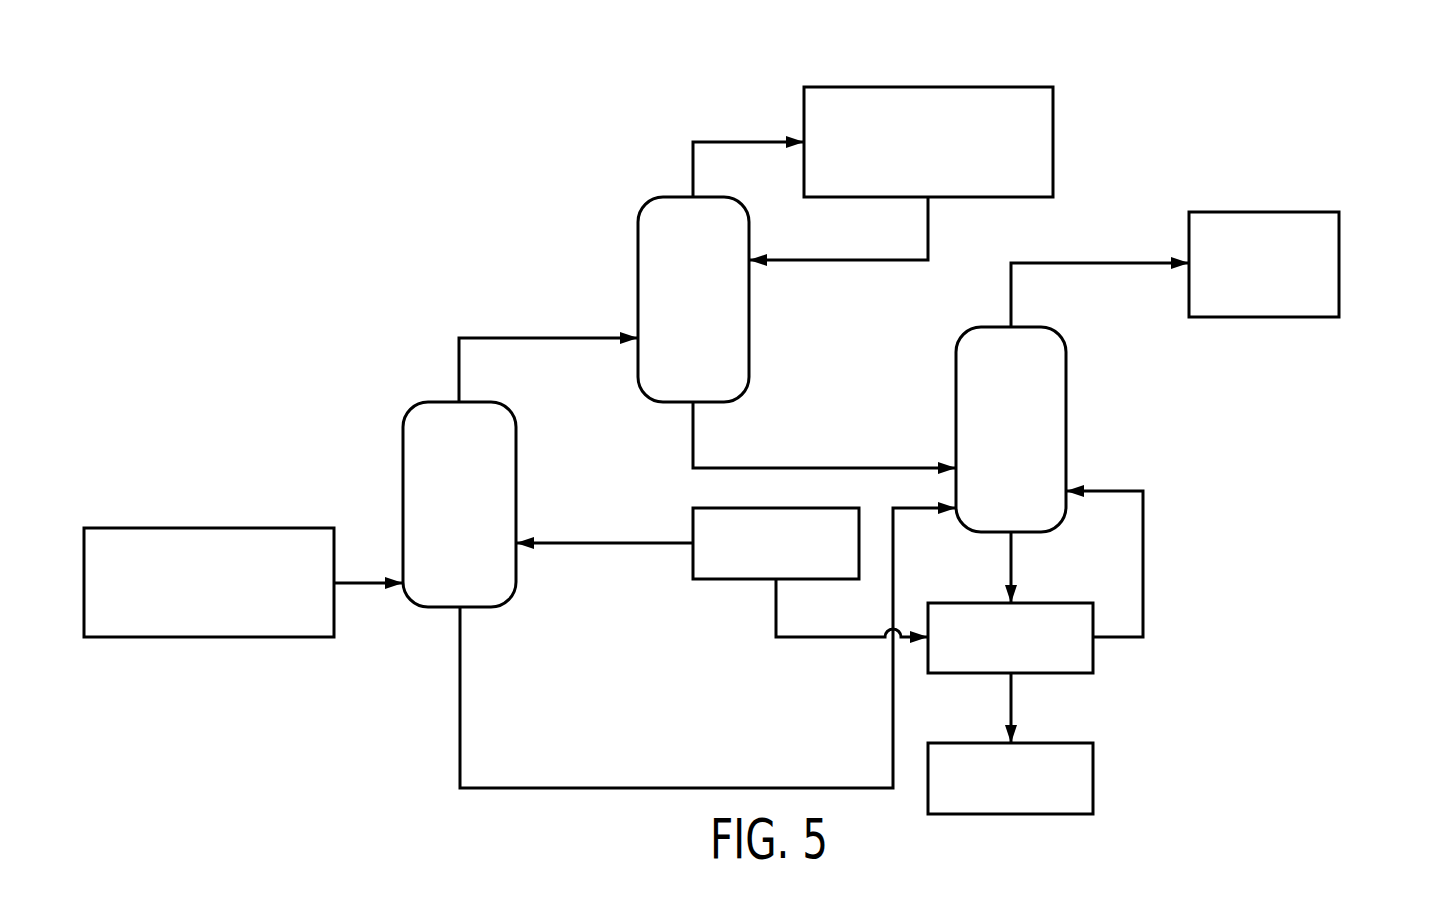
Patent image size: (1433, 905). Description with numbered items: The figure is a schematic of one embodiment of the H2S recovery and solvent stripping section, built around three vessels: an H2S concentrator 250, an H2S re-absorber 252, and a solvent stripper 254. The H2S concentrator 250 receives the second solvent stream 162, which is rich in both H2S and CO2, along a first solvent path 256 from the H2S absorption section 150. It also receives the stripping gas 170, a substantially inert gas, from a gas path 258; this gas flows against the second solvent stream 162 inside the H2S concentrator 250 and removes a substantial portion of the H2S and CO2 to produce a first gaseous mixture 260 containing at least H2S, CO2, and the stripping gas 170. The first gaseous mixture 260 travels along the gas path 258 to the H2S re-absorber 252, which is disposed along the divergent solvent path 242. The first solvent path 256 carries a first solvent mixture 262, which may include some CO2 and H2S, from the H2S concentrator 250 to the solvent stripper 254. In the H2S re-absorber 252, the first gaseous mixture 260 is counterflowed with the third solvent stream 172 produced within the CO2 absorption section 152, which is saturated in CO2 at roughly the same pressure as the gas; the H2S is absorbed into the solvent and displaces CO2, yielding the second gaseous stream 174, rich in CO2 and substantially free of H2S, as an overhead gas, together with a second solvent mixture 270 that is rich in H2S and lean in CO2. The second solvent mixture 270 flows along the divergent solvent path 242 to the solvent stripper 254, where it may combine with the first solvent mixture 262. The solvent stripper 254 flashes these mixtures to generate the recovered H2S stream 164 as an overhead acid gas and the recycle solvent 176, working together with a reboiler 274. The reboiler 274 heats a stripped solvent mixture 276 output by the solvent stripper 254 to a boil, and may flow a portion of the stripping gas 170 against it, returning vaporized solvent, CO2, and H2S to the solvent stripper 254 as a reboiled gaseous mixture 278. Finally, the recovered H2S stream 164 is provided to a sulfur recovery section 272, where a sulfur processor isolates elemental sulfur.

The H2S absorption section 150 is at (214, 528).
The CO2 absorption section 152 is at (1053, 140).
The second solvent stream 162 is at (365, 583).
The recovered H2S stream 164 is at (1097, 263).
The stripping gas 170 is at (708, 508).
The third solvent stream 172 is at (928, 232).
The second gaseous stream 174 is at (693, 175).
The recycle solvent 176 is at (1093, 785).
The divergent solvent path 242 is at (826, 369).
The H2S concentrator 250 is at (413, 402).
The H2S re-absorber 252 is at (749, 298).
The solvent stripper 254 is at (1066, 428).
The first solvent path 256 is at (360, 592).
The gas path 258 is at (606, 543).
The first gaseous mixture 260 is at (545, 338).
The first solvent mixture 262 is at (458, 655).
The second solvent mixture 270 is at (820, 468).
The sulfur recovery section 272 is at (1339, 265).
The reboiler 274 is at (1093, 658).
The stripped solvent mixture 276 is at (1011, 555).
The reboiled gaseous mixture 278 is at (1143, 560).